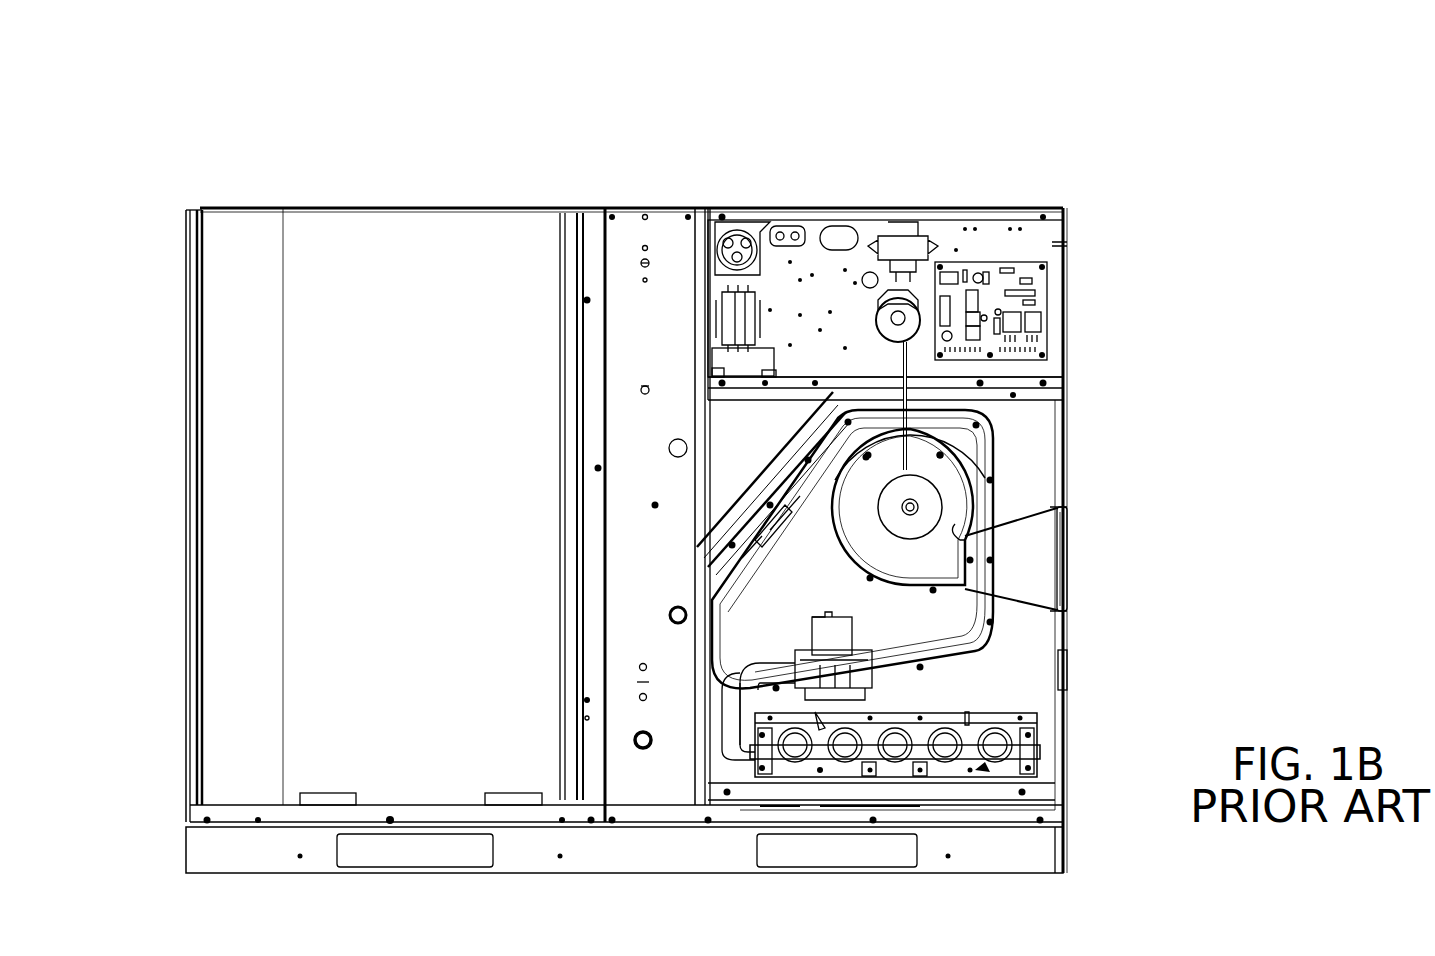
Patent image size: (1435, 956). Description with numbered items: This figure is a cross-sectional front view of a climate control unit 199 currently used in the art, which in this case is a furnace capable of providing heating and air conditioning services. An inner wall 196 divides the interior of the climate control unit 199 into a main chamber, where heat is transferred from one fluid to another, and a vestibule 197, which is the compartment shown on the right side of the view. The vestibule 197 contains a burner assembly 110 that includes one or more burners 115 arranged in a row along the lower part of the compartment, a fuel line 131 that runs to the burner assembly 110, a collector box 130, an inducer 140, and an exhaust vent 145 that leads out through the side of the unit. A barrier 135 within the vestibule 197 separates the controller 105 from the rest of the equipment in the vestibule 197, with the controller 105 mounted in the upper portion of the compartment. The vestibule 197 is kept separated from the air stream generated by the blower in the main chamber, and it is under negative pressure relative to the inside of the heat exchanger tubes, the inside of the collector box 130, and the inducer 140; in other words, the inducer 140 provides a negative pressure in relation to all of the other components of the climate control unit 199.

The climate control unit 199 is at (118, 202).
The vestibule 197 is at (987, 180).
The inner wall 196 is at (1035, 488).
The controller 105 is at (1062, 298).
The burner assembly 110 is at (1072, 778).
The burners 115 is at (1010, 718).
The collector box 130 is at (782, 560).
The fuel line 131 is at (818, 748).
The barrier 135 is at (740, 444).
The inducer 140 is at (938, 468).
The exhaust vent 145 is at (1100, 559).